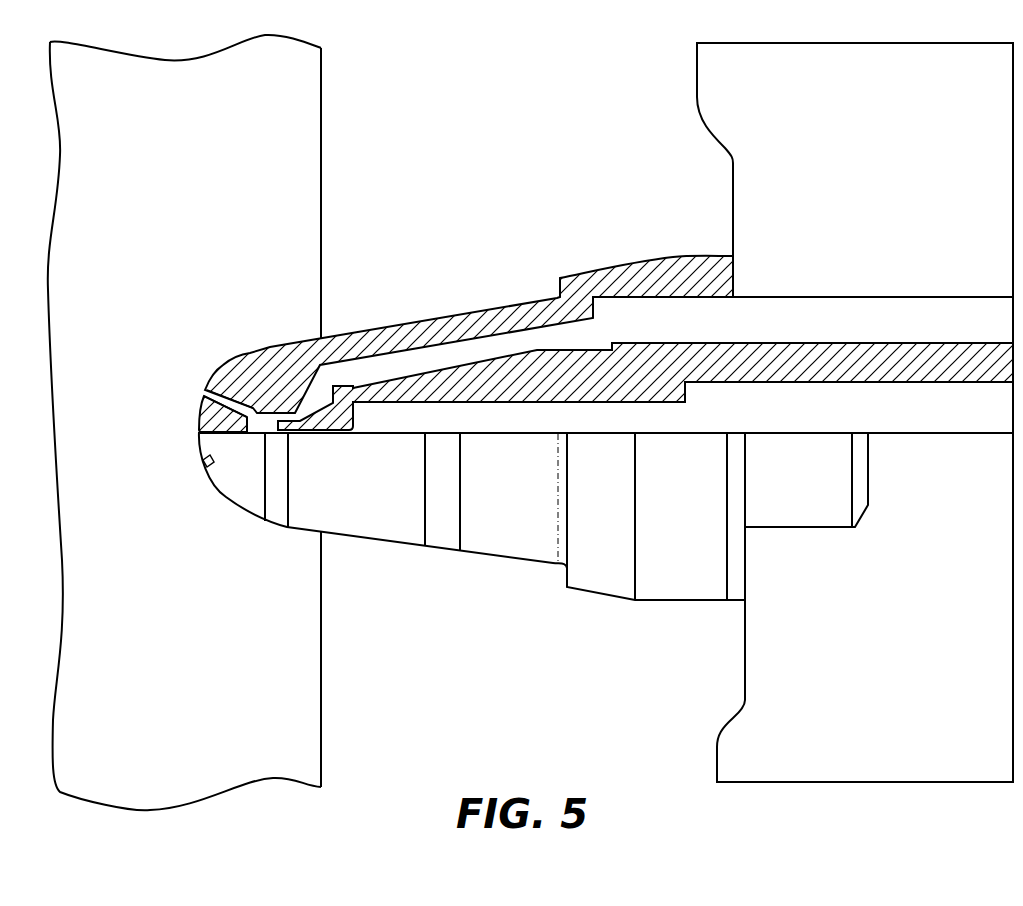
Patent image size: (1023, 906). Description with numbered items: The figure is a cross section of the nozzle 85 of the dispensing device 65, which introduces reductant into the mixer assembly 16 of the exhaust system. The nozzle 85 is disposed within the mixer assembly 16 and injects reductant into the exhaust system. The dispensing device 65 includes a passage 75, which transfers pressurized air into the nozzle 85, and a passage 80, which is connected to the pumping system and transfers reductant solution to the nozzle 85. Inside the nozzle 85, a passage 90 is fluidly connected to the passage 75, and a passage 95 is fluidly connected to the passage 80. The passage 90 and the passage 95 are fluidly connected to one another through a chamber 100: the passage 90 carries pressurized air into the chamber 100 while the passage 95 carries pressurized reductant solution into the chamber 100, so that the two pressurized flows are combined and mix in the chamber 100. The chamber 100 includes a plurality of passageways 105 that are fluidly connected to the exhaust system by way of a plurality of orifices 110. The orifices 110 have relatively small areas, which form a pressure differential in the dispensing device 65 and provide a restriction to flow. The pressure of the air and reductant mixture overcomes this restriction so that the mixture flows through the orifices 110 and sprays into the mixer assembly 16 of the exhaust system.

The mixer assembly 16 is at (176, 201).
The dispensing device 65 is at (859, 153).
The passage 75 is at (973, 313).
The passage 80 is at (965, 422).
The nozzle 85 is at (395, 243).
The passage 90 is at (512, 347).
The passage 95 is at (450, 420).
The chamber 100 is at (268, 433).
The passageways 105 is at (250, 395).
The orifices 110 is at (207, 390).